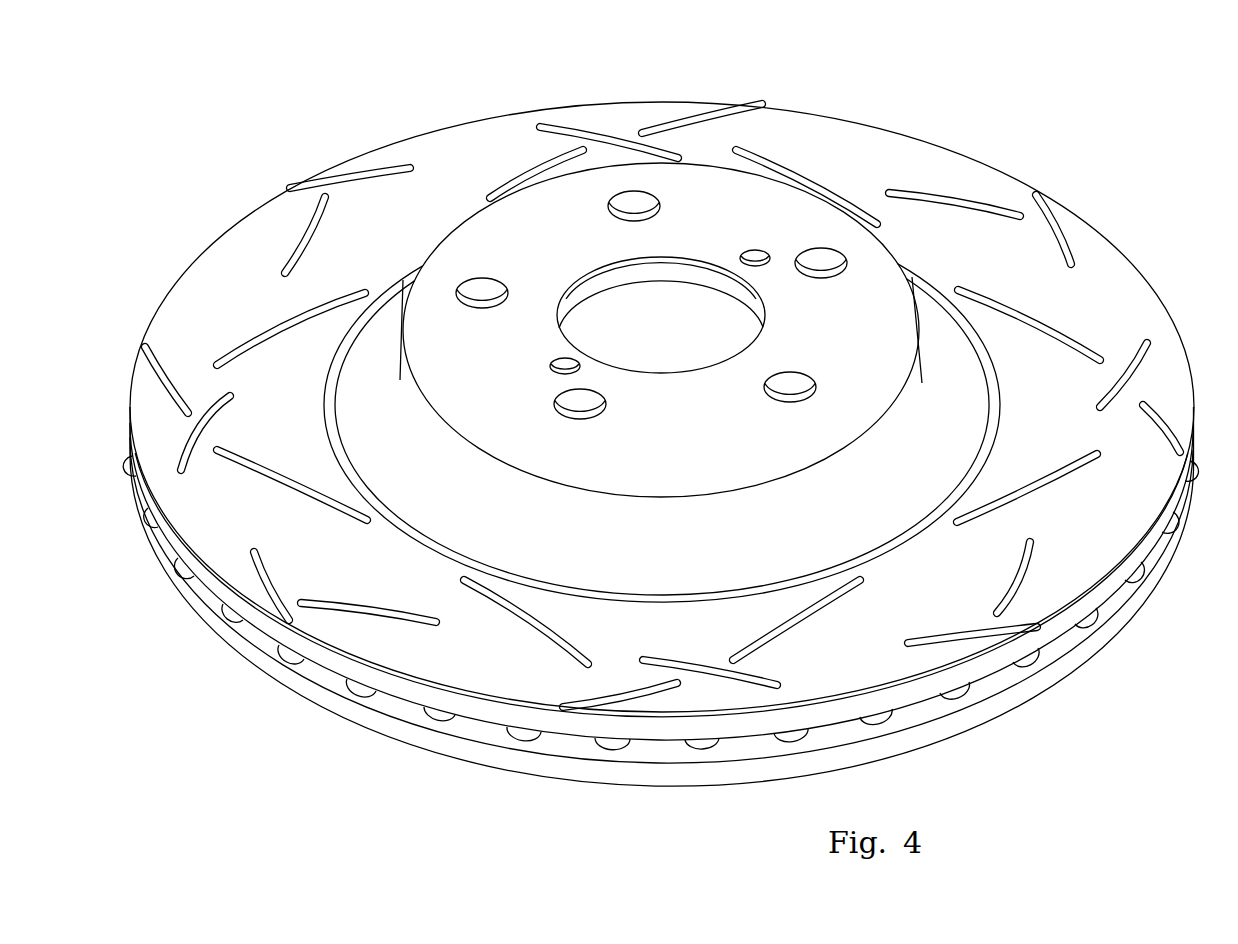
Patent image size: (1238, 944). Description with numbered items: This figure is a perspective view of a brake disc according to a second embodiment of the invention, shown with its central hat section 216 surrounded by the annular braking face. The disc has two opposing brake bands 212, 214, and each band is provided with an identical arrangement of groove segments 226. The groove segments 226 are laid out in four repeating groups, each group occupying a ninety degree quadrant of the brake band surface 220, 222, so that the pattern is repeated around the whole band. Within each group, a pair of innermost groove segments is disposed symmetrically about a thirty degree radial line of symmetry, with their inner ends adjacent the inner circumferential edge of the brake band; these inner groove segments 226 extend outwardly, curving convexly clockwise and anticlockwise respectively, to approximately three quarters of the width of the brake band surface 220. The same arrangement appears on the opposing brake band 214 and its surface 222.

The brake band 212 is at (950, 150).
The brake band 214 is at (317, 699).
The hat section 216 is at (852, 236).
The brake band surface 220 is at (1124, 285).
The brake band surface 222 is at (231, 681).
The groove segments 226 is at (615, 130).